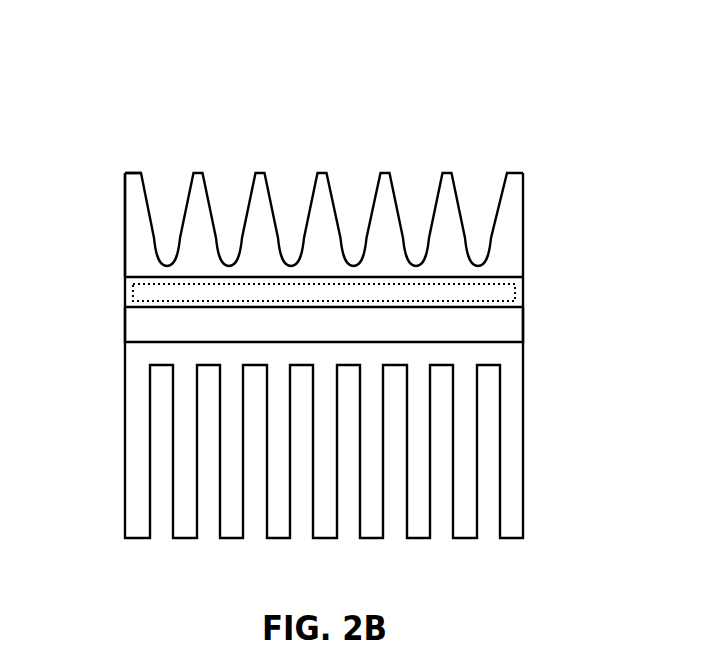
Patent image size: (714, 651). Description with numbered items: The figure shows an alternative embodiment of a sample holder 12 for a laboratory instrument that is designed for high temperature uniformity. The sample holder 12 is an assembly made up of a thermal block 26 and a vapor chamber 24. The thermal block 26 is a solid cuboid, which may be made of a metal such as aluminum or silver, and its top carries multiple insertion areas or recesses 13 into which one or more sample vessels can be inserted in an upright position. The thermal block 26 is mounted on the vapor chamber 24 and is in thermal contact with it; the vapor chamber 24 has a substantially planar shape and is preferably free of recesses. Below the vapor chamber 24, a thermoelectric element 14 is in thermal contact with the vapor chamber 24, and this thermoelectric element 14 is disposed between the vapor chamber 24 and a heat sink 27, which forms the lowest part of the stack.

The sample holder 12 is at (546, 174).
The insertion areas or recesses 13 is at (478, 180).
The thermal block 26 is at (132, 183).
The vapor chamber 24 is at (155, 290).
The thermoelectric element 14 is at (140, 330).
The heat sink 27 is at (190, 352).